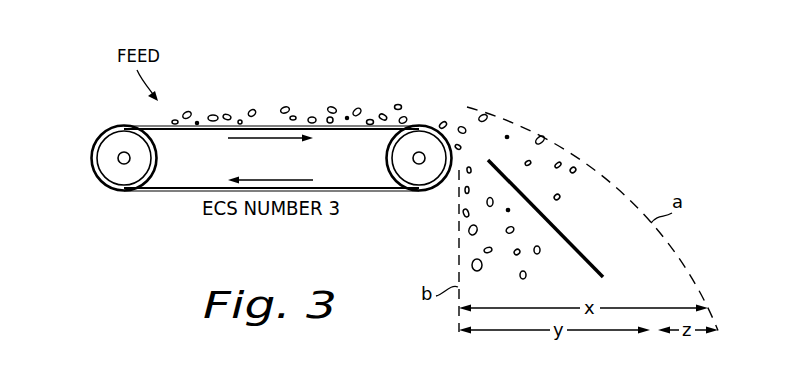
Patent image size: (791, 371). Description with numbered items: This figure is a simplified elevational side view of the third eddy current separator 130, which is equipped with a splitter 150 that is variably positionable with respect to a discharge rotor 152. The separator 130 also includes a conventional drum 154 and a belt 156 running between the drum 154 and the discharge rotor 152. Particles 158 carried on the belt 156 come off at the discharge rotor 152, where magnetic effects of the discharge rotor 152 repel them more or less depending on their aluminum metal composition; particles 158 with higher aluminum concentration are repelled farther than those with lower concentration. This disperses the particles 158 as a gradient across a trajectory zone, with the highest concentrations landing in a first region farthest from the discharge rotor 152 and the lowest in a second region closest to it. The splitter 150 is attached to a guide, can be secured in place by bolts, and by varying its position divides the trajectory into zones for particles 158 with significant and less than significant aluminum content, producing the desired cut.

The third eddy current separator 130 is at (505, 57).
The splitter 150 is at (580, 248).
The discharge rotor 152 is at (418, 137).
The drum 154 is at (100, 160).
The belt 156 is at (278, 126).
The particles 158 is at (543, 137).